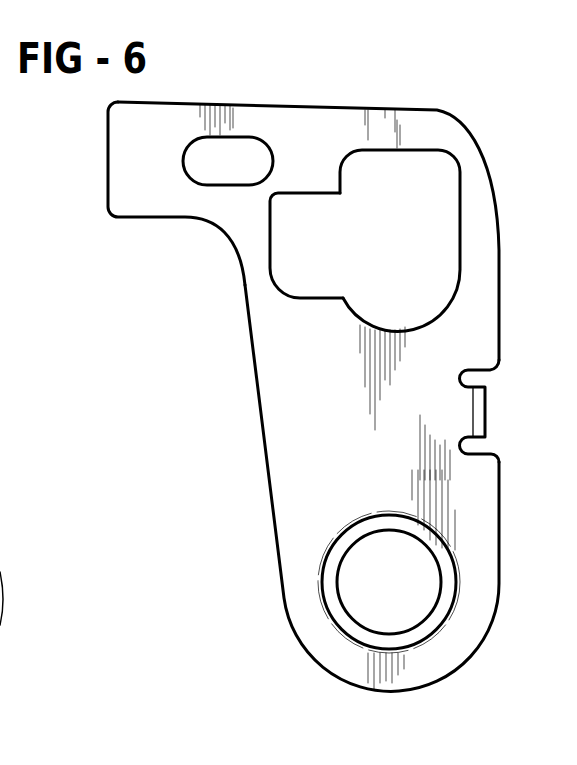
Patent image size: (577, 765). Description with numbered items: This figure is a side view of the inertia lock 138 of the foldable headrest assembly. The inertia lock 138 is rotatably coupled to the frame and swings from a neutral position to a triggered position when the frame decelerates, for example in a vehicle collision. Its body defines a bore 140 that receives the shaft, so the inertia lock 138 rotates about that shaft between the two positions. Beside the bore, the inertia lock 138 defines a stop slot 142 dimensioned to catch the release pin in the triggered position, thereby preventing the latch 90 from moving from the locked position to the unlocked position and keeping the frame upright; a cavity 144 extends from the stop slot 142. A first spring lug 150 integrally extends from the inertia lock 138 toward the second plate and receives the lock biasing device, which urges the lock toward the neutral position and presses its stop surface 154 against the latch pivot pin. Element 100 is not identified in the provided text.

The inertia lock 138 is at (300, 123).
The bore 140 is at (375, 595).
The stop slot 142 is at (290, 258).
The cavity 144 is at (440, 223).
The first spring lug 150 is at (480, 412).
The stop surface 154 is at (233, 248).
The latch 90 is at (0, 578).
The housing 100 is at (0, 665).